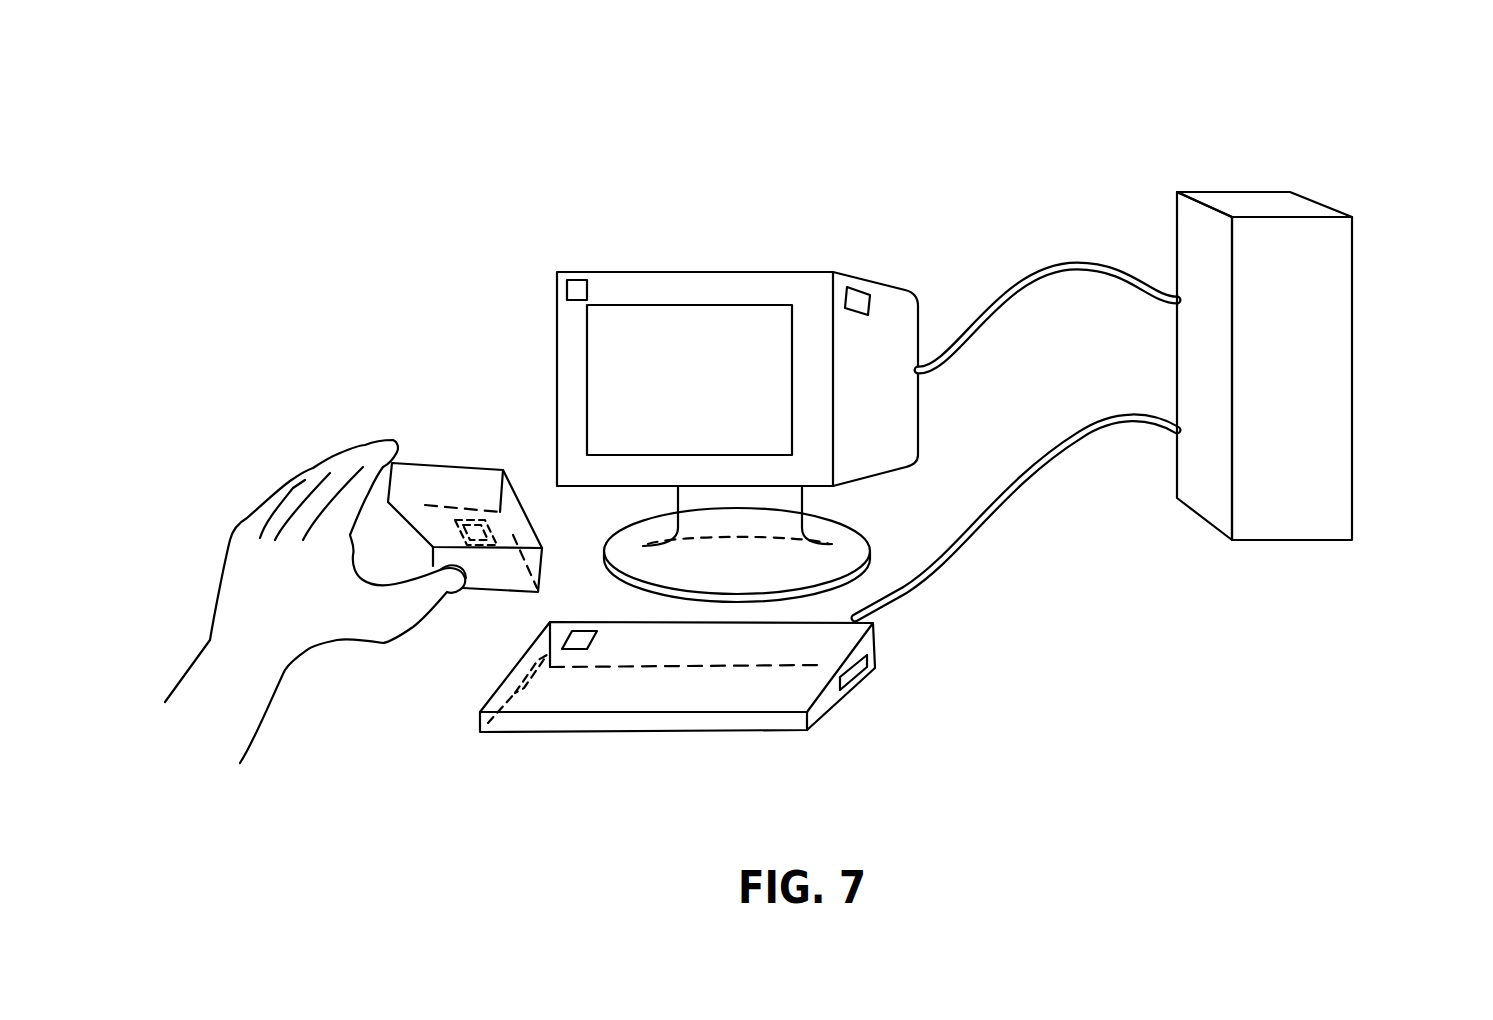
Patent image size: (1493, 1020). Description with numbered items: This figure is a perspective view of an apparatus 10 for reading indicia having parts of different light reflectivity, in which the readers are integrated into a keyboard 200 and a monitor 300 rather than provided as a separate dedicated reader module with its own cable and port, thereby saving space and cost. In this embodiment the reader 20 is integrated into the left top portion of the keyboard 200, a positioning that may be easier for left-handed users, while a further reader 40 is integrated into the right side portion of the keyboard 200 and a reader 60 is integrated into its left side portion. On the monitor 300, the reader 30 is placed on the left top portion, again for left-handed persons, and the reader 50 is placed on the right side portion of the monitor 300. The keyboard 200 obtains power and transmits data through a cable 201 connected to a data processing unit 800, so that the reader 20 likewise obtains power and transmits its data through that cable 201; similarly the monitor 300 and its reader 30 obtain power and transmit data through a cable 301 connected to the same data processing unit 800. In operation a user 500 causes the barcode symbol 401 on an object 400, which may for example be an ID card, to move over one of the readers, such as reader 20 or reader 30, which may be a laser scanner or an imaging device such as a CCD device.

The apparatus for reading indicia 10 is at (761, 172).
The monitor 300 is at (667, 270).
The reader 30 is at (575, 287).
The reader 50 is at (858, 294).
The cable 301 is at (1052, 268).
The cable 201 is at (1088, 417).
The data processing unit 800 is at (1353, 298).
The keyboard 200 is at (650, 732).
The reader 20 is at (576, 640).
The reader 60 is at (506, 681).
The reader 40 is at (858, 676).
The object 400 is at (487, 466).
The barcode symbol 401 is at (467, 520).
The user 500 is at (315, 468).